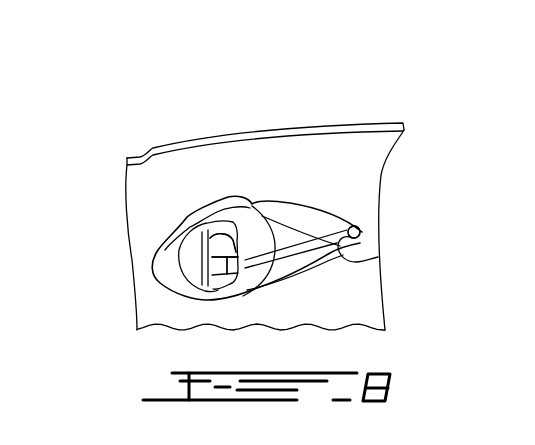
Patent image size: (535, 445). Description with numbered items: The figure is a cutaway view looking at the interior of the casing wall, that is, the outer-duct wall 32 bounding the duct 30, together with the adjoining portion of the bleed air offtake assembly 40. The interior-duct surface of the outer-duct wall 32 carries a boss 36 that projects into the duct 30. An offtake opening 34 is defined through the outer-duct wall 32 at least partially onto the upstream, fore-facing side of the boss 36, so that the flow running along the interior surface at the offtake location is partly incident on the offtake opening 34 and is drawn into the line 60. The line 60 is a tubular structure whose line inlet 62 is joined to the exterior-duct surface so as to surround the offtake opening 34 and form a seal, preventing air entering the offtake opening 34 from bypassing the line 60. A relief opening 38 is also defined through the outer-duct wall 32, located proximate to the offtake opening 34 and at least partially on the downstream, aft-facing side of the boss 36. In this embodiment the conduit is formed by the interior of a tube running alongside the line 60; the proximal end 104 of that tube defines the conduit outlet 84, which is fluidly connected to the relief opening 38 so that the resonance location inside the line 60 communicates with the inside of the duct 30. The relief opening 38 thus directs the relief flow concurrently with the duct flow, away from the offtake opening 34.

The duct 30 is at (138, 203).
The outer-duct wall 32 is at (247, 180).
The offtake opening 34 is at (281, 212).
The boss 36 is at (332, 220).
The relief opening 38 is at (378, 257).
The offtake assembly 40 is at (395, 101).
The line 60 is at (157, 292).
The line inlet 62 is at (224, 254).
The conduit outlet 84 is at (354, 232).
The proximal end 104 is at (363, 232).